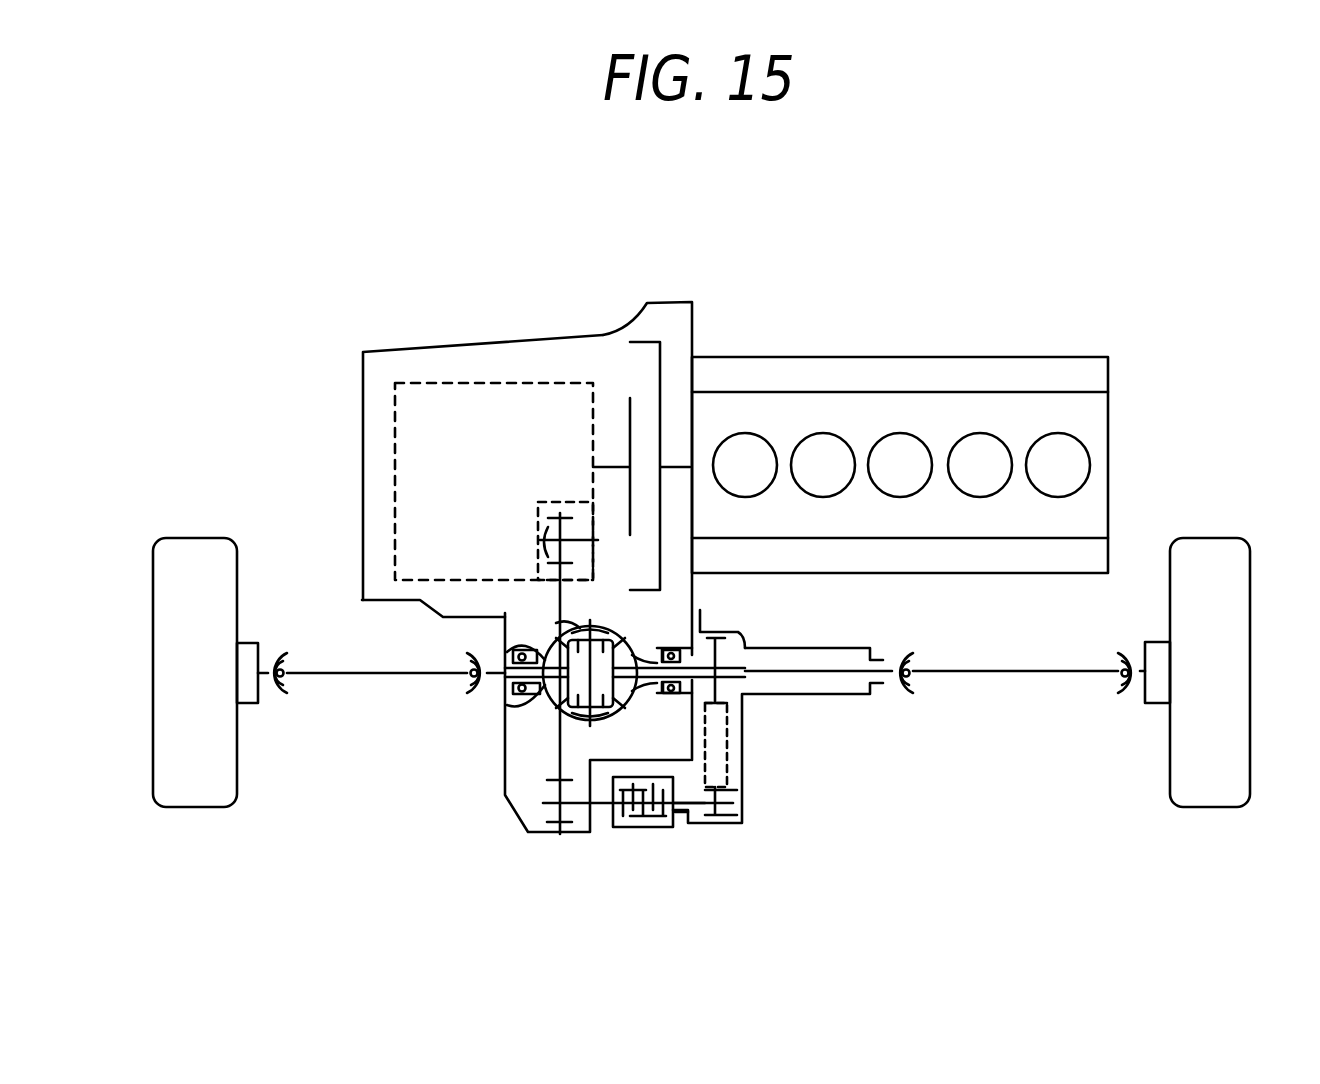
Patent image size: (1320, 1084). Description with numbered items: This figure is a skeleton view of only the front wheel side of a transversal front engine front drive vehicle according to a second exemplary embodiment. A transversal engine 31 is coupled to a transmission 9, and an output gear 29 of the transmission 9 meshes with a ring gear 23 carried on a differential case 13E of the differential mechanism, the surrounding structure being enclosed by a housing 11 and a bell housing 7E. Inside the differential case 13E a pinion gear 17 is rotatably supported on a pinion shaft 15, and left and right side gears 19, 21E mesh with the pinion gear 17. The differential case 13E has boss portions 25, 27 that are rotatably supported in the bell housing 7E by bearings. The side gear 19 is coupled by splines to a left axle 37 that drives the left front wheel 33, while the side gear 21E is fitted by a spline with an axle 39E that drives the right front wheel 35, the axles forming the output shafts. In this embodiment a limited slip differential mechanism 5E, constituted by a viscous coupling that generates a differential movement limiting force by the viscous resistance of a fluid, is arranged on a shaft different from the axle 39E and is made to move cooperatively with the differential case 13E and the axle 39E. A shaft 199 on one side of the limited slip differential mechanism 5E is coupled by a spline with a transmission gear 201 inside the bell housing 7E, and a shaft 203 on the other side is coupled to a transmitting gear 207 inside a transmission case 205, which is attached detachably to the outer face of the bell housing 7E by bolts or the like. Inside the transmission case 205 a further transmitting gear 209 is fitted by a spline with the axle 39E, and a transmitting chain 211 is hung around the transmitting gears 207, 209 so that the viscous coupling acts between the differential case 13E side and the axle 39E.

The limited slip differential mechanism 5E is at (638, 832).
The bell housing 7E is at (520, 820).
The transmission 9 is at (608, 312).
The motor housing 11 is at (438, 346).
The differential case 13E is at (563, 685).
The pinion shaft 15 is at (593, 627).
The pinion gear 17 is at (570, 625).
The side gear 19 is at (513, 690).
The side gear 21E is at (632, 642).
The ring gear 23 is at (555, 757).
The boss portion 25 is at (513, 652).
The boss portion 27 is at (656, 655).
The output gear 29 is at (566, 622).
The transversal engine 31 is at (912, 353).
The front wheel 33 is at (185, 535).
The front wheel 35 is at (1218, 535).
The axle 37 is at (325, 686).
The axle 39E is at (843, 674).
The shaft 199 is at (605, 807).
The transmission gear 201 is at (552, 838).
The shaft 203 is at (675, 826).
The transmission case 205 is at (743, 790).
The transmitting gear 207 is at (713, 838).
The transmitting gear 209 is at (745, 632).
The transmitting chain 211 is at (743, 747).